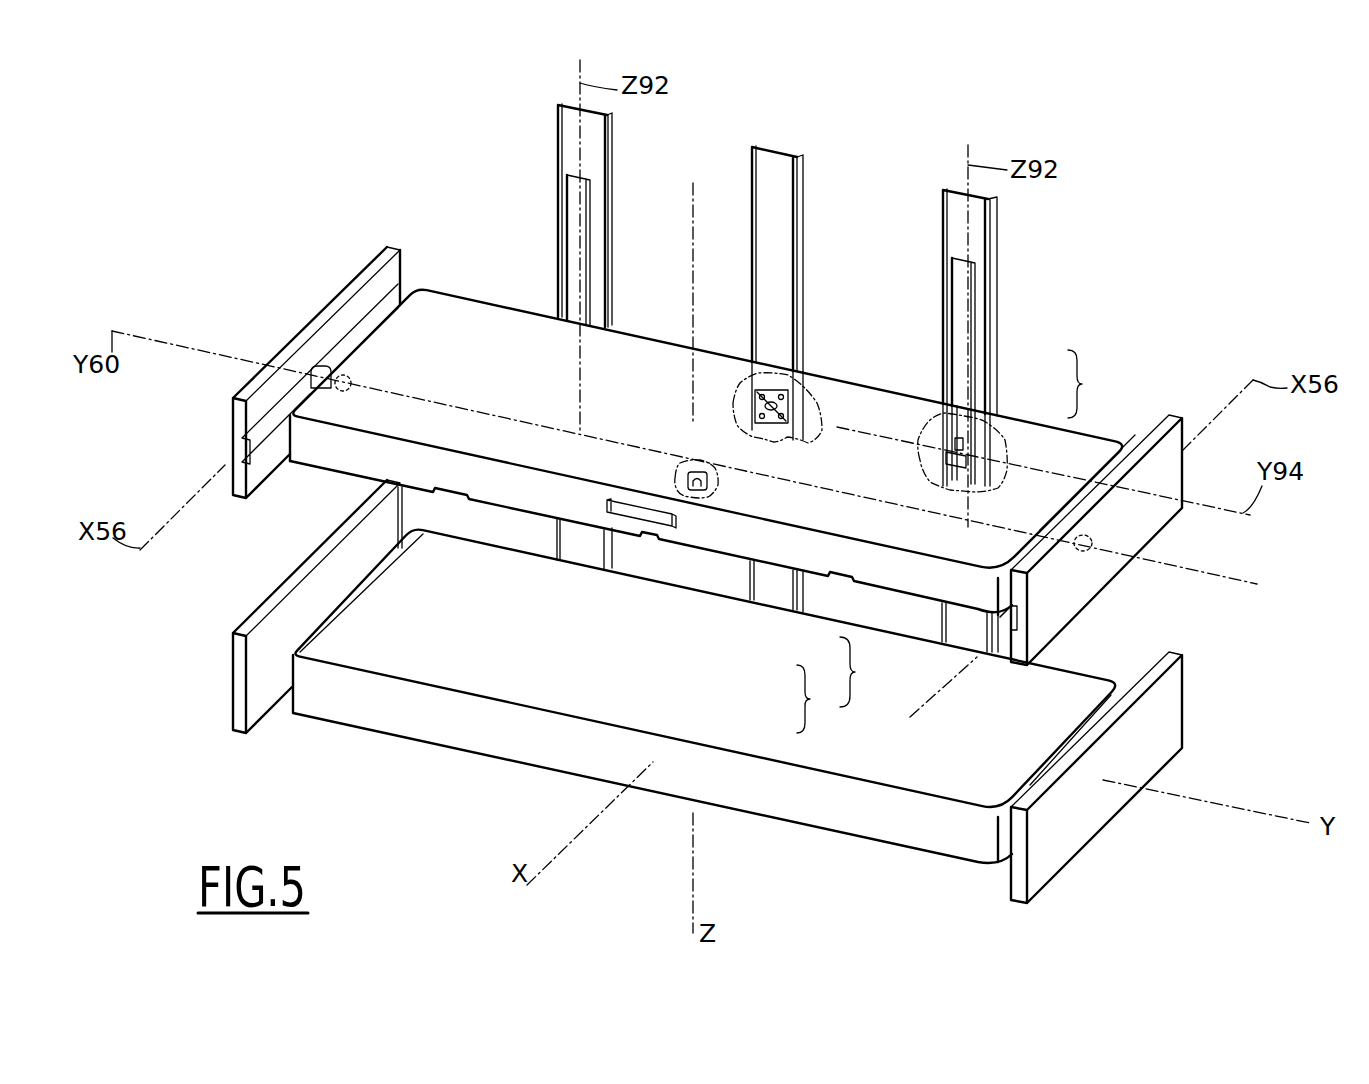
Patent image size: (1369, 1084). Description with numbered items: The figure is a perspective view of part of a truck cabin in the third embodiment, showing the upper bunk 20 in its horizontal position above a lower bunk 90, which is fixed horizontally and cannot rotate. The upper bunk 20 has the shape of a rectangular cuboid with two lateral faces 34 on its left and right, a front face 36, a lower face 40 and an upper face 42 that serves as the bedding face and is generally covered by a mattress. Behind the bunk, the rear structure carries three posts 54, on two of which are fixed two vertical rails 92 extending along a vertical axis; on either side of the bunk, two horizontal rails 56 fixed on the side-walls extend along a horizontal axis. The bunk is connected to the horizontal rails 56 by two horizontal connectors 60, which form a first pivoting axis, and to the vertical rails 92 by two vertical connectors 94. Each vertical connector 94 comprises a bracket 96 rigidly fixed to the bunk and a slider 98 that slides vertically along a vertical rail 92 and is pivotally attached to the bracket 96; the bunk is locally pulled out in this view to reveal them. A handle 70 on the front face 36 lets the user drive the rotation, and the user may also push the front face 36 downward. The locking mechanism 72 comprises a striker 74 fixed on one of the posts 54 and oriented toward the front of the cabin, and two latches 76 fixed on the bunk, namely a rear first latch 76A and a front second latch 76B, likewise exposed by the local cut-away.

The upper bunk 20 is at (463, 327).
The lateral faces 34 is at (1022, 588).
The front face 36 is at (339, 439).
The lower face 40 is at (502, 512).
The upper face 42 is at (528, 343).
The posts 54 is at (593, 138).
The horizontal rails 56 is at (367, 297).
The horizontal connectors 60 is at (317, 367).
The handle 70 is at (648, 522).
The locking mechanism 72 is at (864, 672).
The striker 74 is at (803, 424).
The latches 76 is at (820, 699).
The first latch 76A is at (757, 425).
The second latch 76B is at (700, 497).
The lower bunk 90 is at (897, 823).
The vertical rails 92 is at (577, 200).
The vertical connectors 94 is at (1017, 421).
The bracket 96 is at (950, 462).
The slider 98 is at (958, 442).